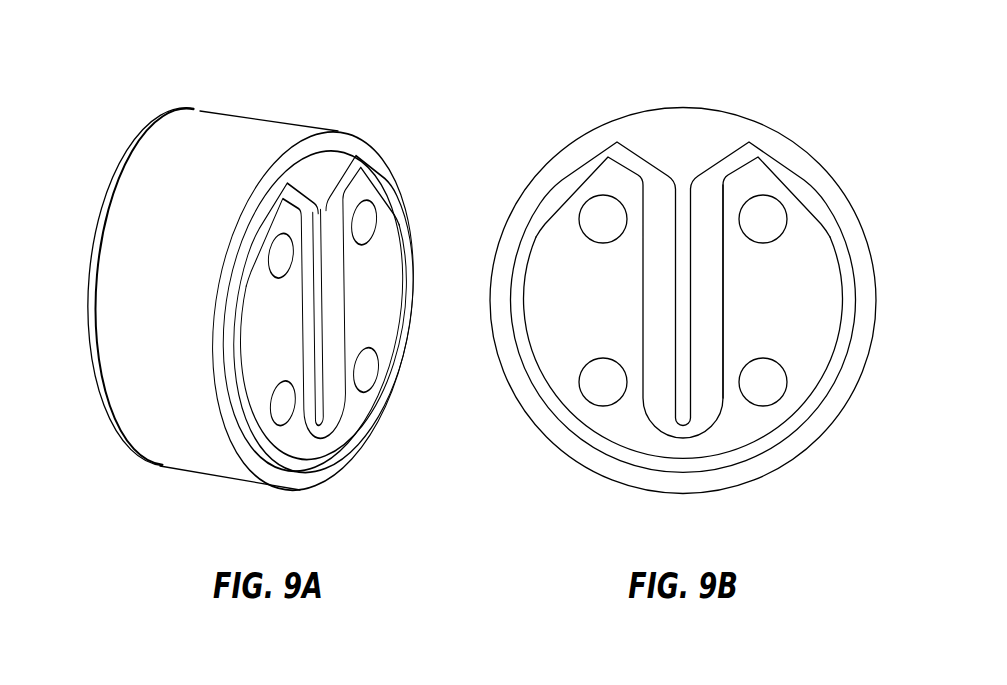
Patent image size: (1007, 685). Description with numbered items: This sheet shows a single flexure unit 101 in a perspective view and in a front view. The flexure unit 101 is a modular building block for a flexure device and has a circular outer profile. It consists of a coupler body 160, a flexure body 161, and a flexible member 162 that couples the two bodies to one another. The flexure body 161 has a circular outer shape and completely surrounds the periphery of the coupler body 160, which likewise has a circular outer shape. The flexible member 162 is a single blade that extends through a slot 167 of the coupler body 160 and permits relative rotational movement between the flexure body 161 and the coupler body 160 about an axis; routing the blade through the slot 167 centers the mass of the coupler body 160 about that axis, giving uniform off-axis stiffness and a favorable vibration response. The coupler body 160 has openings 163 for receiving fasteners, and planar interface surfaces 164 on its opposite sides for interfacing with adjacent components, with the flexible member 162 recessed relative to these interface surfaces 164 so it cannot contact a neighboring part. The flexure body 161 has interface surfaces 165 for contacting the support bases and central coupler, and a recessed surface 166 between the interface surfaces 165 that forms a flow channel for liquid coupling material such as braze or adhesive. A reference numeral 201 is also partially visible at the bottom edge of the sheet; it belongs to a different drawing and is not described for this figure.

In FIG. 9A, the flexure unit 101 is at (190, 69).
In FIG. 9B, the flexure unit 101 is at (695, 71).
In FIG. 9A, the coupler body 160 is at (392, 277).
In FIG. 9B, the coupler body 160 is at (817, 260).
In FIG. 9A, the flexure body 161 is at (132, 267).
In FIG. 9B, the flexure body 161 is at (790, 138).
In FIG. 9A, the flexible member 162 is at (318, 327).
In FIG. 9B, the flexible member 162 is at (683, 335).
In FIG. 9A, the openings 163 is at (378, 208).
In FIG. 9B, the openings 163 is at (776, 204).
In FIG. 9A, the interface surfaces 164 is at (277, 345).
In FIG. 9B, the interface surfaces 164 is at (607, 318).
In FIG. 9A, the interface surfaces 165 is at (297, 133).
In FIG. 9A, the recessed surface 166 is at (219, 203).
In FIG. 9B, the slot 167 is at (719, 350).
In FIG. 9A, the device (partial, other sheet) 201 is at (133, 684).